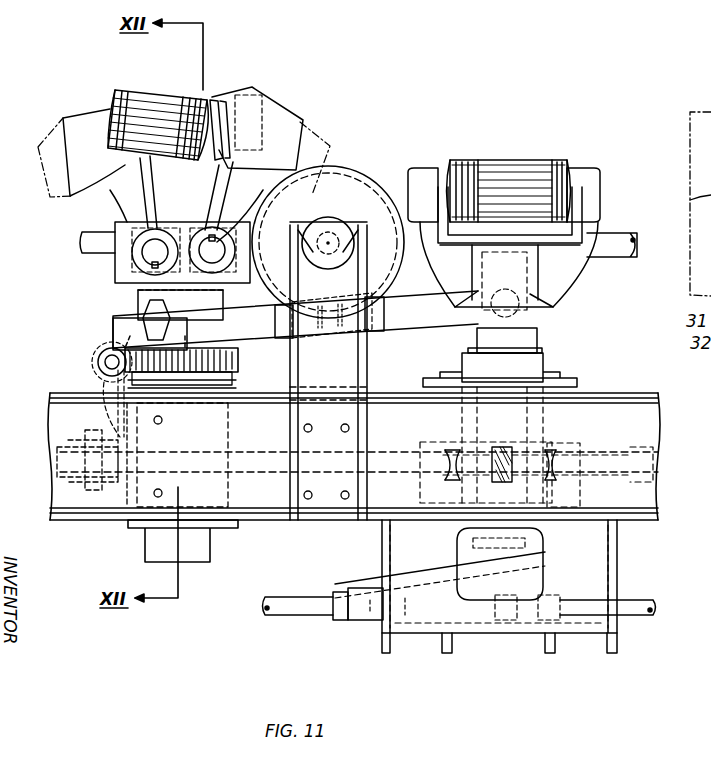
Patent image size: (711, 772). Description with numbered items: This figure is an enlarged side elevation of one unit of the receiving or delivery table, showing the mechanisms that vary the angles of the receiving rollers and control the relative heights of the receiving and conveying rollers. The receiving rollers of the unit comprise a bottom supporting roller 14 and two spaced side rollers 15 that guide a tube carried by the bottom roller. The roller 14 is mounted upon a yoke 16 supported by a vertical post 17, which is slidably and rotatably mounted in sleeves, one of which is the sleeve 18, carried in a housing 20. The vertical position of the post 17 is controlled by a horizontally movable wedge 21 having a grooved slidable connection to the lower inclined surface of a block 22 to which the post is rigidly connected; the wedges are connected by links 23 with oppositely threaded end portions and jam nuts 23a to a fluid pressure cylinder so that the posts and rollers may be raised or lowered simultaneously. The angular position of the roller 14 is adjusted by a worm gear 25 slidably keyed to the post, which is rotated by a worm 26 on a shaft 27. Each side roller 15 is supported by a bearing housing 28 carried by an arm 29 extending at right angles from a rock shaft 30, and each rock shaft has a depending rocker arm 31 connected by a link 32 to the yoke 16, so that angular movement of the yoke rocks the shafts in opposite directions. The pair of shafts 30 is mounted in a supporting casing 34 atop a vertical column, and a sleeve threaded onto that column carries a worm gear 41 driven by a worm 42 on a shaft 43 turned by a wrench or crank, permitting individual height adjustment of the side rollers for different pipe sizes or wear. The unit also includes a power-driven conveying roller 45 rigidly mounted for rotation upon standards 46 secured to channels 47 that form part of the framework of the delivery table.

The bottom supporting roller 14 is at (492, 168).
The side rollers 15 is at (137, 100).
The yoke 16 is at (572, 265).
The vertical post 17 is at (523, 337).
The sleeve 18 is at (540, 350).
The housing 20 is at (538, 368).
The wedge 21 is at (362, 585).
The block 22 is at (463, 555).
The links 23 is at (292, 612).
The jam nuts 23a is at (340, 620).
The worm gear 25 is at (553, 478).
The worm 26 is at (540, 445).
The shaft 27 is at (597, 468).
The bearing housing 28 is at (273, 120).
The arm 29 is at (230, 190).
The rock shaft 30 is at (148, 250).
The rocker arm 31 is at (155, 300).
The link 32 is at (430, 315).
The supporting casing 34 is at (117, 262).
The worm gear 41 is at (185, 367).
The worm 42 is at (108, 363).
The shaft 43 is at (102, 372).
The conveying roller 45 is at (343, 187).
The standards 46 is at (303, 353).
The channels 47 is at (63, 505).